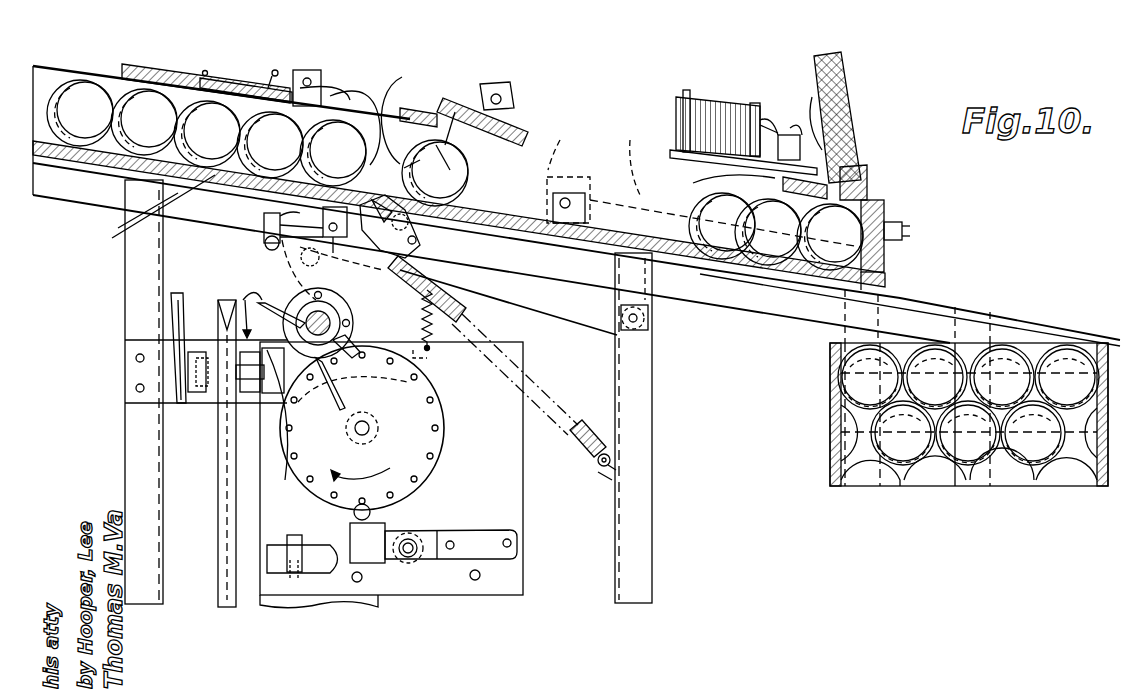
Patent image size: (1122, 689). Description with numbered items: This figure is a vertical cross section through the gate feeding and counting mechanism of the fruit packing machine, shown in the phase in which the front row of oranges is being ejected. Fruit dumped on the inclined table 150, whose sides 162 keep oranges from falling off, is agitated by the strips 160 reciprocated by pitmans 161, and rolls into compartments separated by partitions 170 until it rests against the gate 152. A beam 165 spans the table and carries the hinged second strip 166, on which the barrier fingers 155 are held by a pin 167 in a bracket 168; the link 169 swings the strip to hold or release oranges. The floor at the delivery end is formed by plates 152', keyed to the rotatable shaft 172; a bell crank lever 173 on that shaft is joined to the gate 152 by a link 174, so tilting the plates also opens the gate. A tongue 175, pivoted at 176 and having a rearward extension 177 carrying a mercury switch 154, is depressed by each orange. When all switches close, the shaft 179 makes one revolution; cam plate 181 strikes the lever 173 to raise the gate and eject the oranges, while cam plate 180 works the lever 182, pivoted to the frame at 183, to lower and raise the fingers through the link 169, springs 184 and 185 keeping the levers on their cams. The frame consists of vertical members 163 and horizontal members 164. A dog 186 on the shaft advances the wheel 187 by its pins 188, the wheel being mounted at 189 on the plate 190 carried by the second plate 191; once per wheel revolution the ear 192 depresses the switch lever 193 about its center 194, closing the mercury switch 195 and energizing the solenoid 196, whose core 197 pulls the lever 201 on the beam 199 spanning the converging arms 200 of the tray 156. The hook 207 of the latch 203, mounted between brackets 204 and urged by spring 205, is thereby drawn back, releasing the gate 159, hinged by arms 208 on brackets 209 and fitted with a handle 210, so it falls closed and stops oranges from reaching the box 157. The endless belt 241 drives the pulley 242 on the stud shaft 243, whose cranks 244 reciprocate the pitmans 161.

The inclined table 150 is at (576, 206).
The gate 152 is at (506, 110).
The plate 152' is at (462, 112).
The mercury switch 154 is at (278, 250).
The barrier fingers 155 is at (374, 108).
The inclined tray 156 is at (644, 240).
The box 157 is at (830, 440).
The gate 159 is at (880, 206).
The agitating strips 160 is at (144, 213).
The pitmans 161 is at (170, 308).
The sides 162 is at (70, 70).
The vertical structural members 163 is at (152, 498).
The horizontal frame members 164 is at (795, 308).
The beam 165 is at (162, 72).
The second strip 166 is at (228, 80).
The pin 167 is at (300, 70).
The bracket 168 is at (273, 73).
The link 169 is at (337, 92).
The partition 170 is at (206, 133).
The rotatable shaft 172 is at (432, 244).
The bell crank lever 173 is at (457, 169).
The link 174 is at (455, 150).
The tongue 175 is at (416, 111).
The pivot 176 is at (335, 241).
The rearward extension 177 is at (264, 215).
The shaft 179 is at (312, 305).
The cam plate 180 is at (248, 305).
The cam plate 181 is at (448, 328).
The lever 182 is at (580, 313).
The pivot 183 is at (648, 322).
The spring 184 is at (580, 447).
The spring 185 is at (470, 317).
The dog 186 is at (338, 380).
The wheel 187 is at (423, 463).
The pins 188 is at (438, 430).
The rotatable mounting 189 is at (365, 435).
The plate 190 is at (472, 598).
The second plate 191 is at (332, 608).
The ear 192 is at (382, 518).
The switch lever 193 is at (360, 535).
The center 194 is at (408, 557).
The mercury switch 195 is at (331, 565).
The solenoid 196 is at (700, 104).
The core 197 is at (760, 112).
The beam 199 is at (737, 172).
The converging arms 200 is at (580, 177).
The lever 201 is at (792, 134).
The latch 203 is at (845, 104).
The brackets 204 is at (862, 165).
The spring 205 is at (830, 237).
The hook 207 is at (813, 106).
The arms 208 is at (725, 182).
The brackets 209 is at (564, 144).
The handle 210 is at (902, 233).
The endless belt 241 is at (223, 555).
The pulley 242 is at (224, 440).
The stud shaft 243 is at (125, 350).
The cranks 244 is at (290, 468).